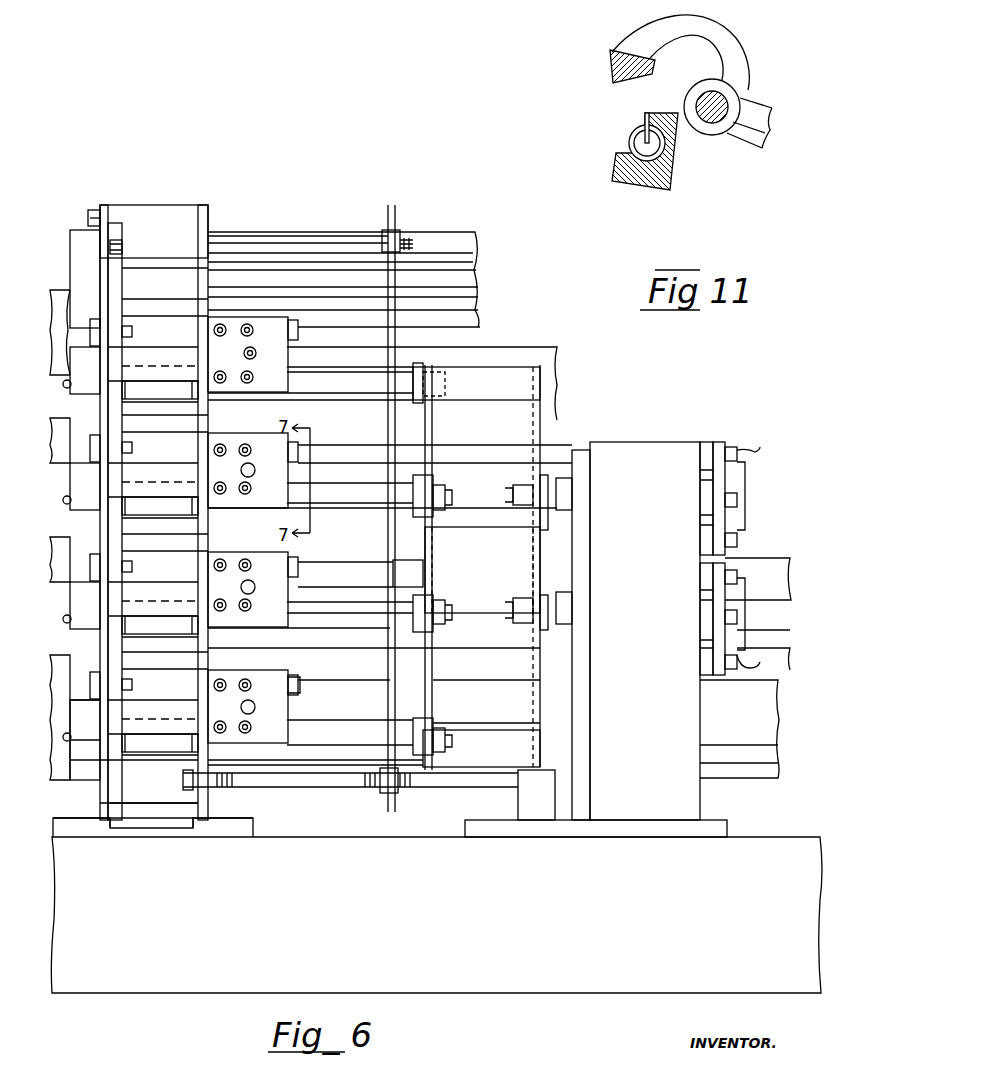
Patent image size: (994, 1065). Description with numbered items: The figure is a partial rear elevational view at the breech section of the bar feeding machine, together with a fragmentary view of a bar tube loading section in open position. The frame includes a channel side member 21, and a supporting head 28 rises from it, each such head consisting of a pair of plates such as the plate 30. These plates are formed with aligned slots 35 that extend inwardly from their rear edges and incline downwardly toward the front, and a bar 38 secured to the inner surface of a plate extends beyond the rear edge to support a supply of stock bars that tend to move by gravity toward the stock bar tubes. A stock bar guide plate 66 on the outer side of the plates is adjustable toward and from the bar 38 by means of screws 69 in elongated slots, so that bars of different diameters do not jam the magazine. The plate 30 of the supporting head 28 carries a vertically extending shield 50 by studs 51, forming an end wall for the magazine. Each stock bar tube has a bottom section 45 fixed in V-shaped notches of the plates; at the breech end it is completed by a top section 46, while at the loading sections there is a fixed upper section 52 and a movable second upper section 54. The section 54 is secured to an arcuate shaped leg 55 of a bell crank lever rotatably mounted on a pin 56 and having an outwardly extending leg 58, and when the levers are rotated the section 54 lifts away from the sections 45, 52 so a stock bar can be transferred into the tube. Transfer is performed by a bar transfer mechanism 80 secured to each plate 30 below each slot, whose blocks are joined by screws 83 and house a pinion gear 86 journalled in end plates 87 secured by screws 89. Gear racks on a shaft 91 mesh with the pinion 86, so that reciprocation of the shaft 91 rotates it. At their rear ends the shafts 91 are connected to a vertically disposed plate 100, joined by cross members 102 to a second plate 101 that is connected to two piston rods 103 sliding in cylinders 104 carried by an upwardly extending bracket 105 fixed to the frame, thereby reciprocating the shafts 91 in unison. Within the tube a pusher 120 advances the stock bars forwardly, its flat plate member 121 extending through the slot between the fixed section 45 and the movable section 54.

In FIG. 6, the channel side member 21 is at (436, 915).
In FIG. 6, the supporting head 28 is at (222, 182).
In FIG. 6, the plate 30 is at (210, 224).
In FIG. 6, the slot 35 is at (208, 290).
In FIG. 6, the bar 38 is at (120, 288).
In FIG. 6, the bottom section 45 is at (475, 326).
In FIG. 11, the bottom section 45 is at (672, 178).
In FIG. 6, the top section 46 is at (624, 668).
In FIG. 6, the shield 50 is at (396, 308).
In FIG. 6, the stud 51 is at (288, 236).
In FIG. 6, the upper section 52 is at (476, 286).
In FIG. 11, the upper section 52 is at (630, 185).
In FIG. 6, the second upper section 54 is at (448, 236).
In FIG. 11, the second upper section 54 is at (612, 80).
In FIG. 11, the arcuate shaped leg 55 is at (722, 42).
In FIG. 11, the pin 56 is at (722, 100).
In FIG. 11, the outwardly extending leg 58 is at (770, 108).
In FIG. 6, the stock bar guide plate 66 is at (80, 248).
In FIG. 6, the screw 69 is at (94, 210).
In FIG. 6, the bar transfer mechanism 80 is at (294, 306).
In FIG. 6, the screw 83 is at (296, 690).
In FIG. 6, the pinion gear 86 is at (249, 469).
In FIG. 6, the end plate 87 is at (269, 585).
In FIG. 6, the screw 89 is at (222, 683).
In FIG. 6, the shaft 91 is at (340, 378).
In FIG. 6, the plate 100 is at (430, 446).
In FIG. 6, the second plate 101 is at (562, 566).
In FIG. 6, the cross member 102 is at (476, 565).
In FIG. 6, the piston rod 103 is at (572, 496).
In FIG. 6, the cylinder 104 is at (706, 450).
In FIG. 6, the bracket 105 is at (636, 631).
In FIG. 11, the pusher 120 is at (630, 138).
In FIG. 11, the flat plate member 121 is at (645, 116).